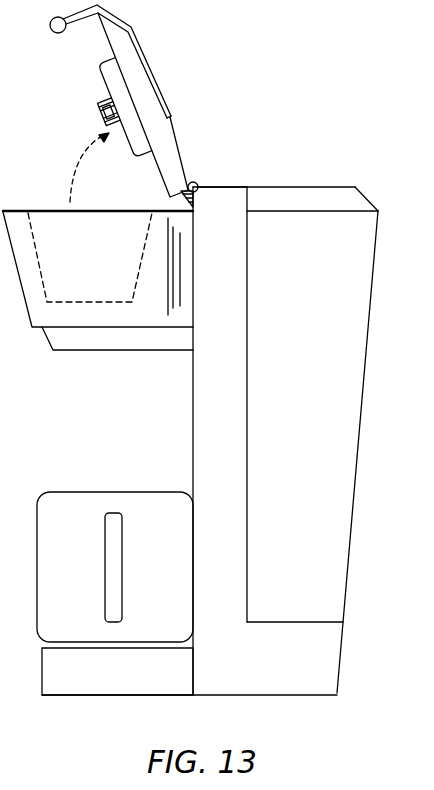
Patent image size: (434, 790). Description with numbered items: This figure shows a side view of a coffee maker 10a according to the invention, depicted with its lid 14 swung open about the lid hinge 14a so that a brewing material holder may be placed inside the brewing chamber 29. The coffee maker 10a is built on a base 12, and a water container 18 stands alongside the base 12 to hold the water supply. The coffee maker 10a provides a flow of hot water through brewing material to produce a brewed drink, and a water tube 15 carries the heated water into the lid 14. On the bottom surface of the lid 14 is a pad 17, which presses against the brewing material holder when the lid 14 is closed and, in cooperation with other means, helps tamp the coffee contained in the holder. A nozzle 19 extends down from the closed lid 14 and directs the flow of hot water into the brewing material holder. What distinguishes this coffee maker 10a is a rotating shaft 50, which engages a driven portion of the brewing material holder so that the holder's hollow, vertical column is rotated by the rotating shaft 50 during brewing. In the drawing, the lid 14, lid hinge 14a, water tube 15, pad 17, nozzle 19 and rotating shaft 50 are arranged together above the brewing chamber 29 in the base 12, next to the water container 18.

The coffee maker 10a is at (313, 128).
The base 12 is at (230, 300).
The lid 14 is at (163, 143).
The lid hinge 14a is at (194, 182).
The water tube 15 is at (205, 190).
The pad 17 is at (108, 77).
The water container 18 is at (307, 358).
The nozzle 19 is at (93, 105).
The brewing chamber 29 is at (88, 262).
The rotating shaft 50 is at (95, 117).